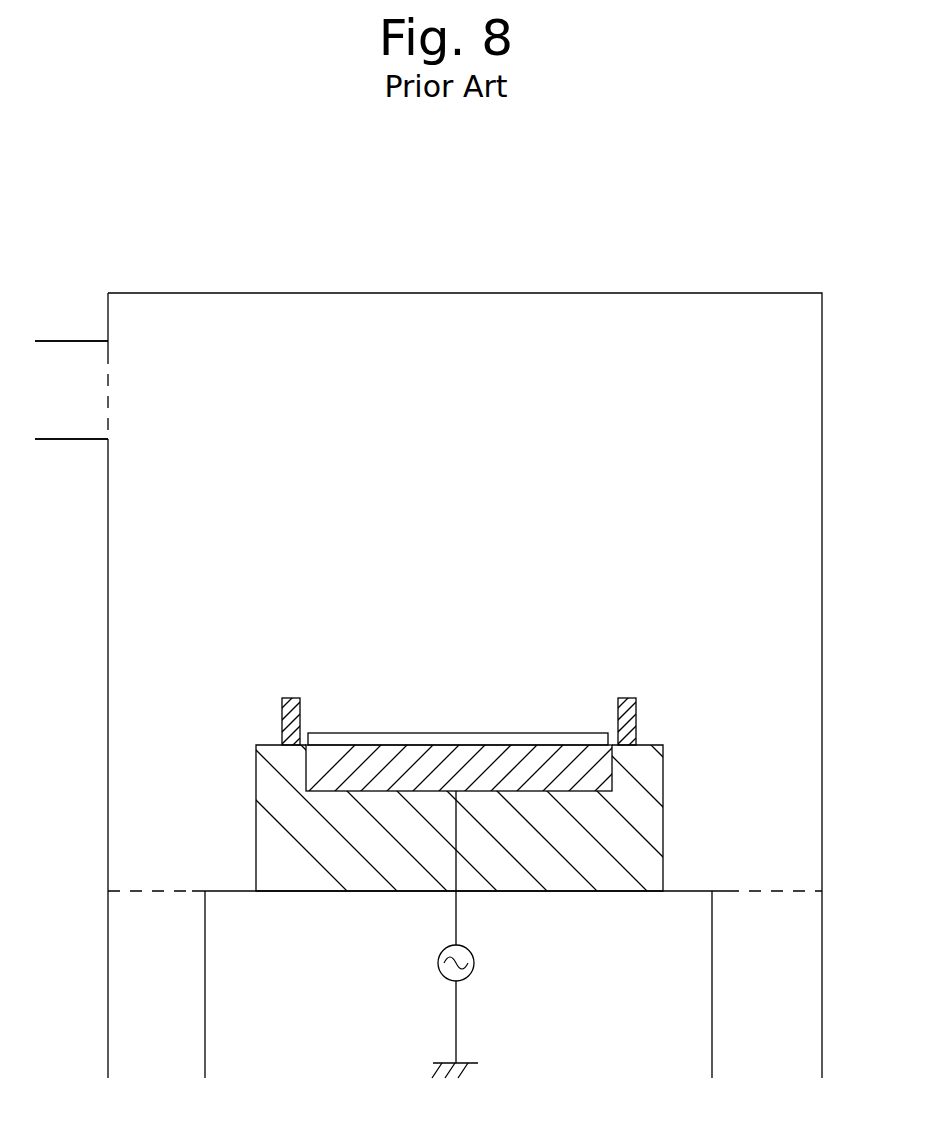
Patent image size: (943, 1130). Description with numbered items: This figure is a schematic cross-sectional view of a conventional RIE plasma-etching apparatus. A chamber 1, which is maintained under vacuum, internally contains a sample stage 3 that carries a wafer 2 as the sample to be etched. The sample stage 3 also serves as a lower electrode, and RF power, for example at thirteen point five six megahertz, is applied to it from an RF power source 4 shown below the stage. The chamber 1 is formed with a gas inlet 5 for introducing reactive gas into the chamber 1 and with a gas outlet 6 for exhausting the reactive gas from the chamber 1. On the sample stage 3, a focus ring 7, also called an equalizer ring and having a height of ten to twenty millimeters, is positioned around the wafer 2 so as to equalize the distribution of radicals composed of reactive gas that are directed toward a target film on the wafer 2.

The chamber 1 is at (822, 596).
The wafer 2 is at (526, 733).
The sample stage 3 is at (447, 743).
The RF power source 4 is at (438, 963).
The gas inlet 5 is at (70, 440).
The gas outlet 6 is at (107, 1013).
The focus ring 7 is at (627, 697).